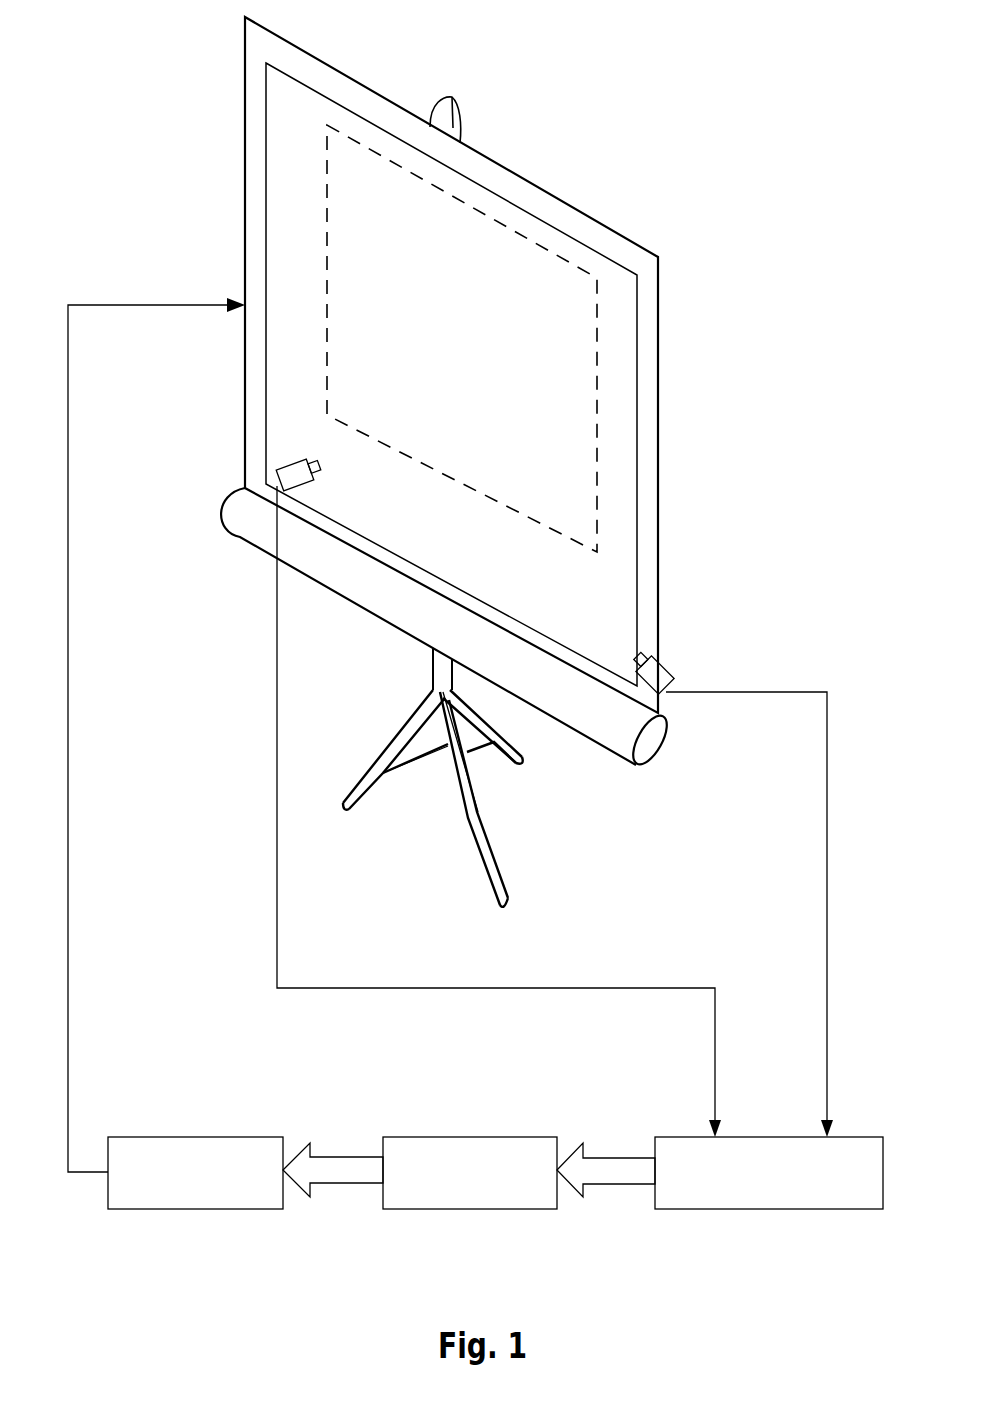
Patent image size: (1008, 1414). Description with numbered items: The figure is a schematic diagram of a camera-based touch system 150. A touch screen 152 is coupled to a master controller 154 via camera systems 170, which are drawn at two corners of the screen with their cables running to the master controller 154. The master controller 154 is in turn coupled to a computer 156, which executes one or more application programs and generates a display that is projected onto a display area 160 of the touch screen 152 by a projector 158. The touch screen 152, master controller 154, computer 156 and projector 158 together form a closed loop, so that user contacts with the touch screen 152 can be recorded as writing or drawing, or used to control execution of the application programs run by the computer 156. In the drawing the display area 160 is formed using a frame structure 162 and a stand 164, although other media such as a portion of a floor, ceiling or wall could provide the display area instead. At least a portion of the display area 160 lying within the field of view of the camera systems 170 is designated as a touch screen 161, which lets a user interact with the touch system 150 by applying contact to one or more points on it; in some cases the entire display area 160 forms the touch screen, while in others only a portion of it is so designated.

The touch system 150 is at (600, 98).
The touch screen 152 is at (618, 212).
The master controller 154 is at (770, 1209).
The computer 156 is at (450, 1209).
The projector 158 is at (203, 1209).
The display area 160 is at (610, 309).
The touch screen 161 is at (565, 425).
The frame structure 162 is at (660, 347).
The stand 164 is at (425, 745).
The camera systems 170 is at (272, 461).